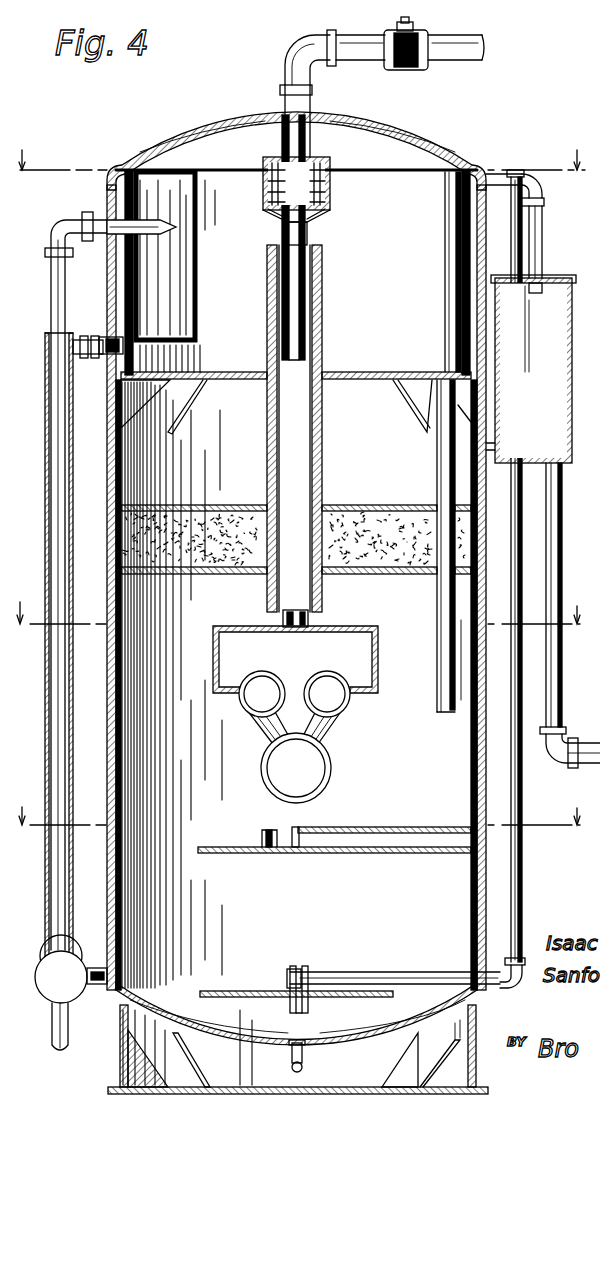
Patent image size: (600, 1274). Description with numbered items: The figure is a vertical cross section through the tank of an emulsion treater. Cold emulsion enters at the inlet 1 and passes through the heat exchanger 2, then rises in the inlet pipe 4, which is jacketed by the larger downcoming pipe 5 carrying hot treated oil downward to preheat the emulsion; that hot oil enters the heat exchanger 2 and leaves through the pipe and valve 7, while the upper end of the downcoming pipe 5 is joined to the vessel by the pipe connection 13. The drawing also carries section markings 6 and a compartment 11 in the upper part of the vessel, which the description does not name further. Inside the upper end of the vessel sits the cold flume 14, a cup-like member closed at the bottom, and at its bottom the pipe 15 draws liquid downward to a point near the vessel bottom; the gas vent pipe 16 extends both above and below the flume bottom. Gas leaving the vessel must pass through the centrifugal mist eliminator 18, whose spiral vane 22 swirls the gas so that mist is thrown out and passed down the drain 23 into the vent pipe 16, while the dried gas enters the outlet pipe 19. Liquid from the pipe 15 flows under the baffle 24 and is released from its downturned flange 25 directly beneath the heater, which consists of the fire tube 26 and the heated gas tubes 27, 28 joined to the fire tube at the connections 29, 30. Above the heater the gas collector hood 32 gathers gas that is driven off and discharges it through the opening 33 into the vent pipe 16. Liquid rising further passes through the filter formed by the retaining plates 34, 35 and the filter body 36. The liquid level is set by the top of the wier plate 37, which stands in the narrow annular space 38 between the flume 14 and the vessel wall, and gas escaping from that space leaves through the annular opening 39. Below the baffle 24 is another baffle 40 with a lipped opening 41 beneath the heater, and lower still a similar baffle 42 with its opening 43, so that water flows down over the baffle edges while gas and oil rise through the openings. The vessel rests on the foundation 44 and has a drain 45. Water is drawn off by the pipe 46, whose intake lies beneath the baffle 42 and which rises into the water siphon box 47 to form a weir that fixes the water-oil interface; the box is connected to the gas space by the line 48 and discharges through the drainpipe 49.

The inlet 1 is at (52, 1034).
The heat exchanger 2 is at (36, 950).
The inlet pipe 4 is at (52, 412).
The downcoming pipe 5 is at (30, 458).
The section line 6 is at (296, 600).
The pipe and valve 7 is at (296, 804).
The compartment 11 is at (182, 208).
The pipe connection 13 is at (89, 360).
The flume 14 is at (486, 224).
The pipe 15 is at (438, 442).
The gas vent pipe 16 is at (324, 307).
The centrifugal mist eliminator 18 is at (330, 182).
The outlet pipe 19 is at (440, 64).
The spiral vane 22 is at (263, 163).
The drain 23 is at (308, 240).
The baffle 24 is at (367, 826).
The downturned flange 25 is at (292, 827).
The fire tube 26 is at (333, 768).
The heated gas tube 27 is at (351, 709).
The heated gas tube 28 is at (239, 707).
The connection 29 is at (340, 734).
The connection 30 is at (262, 738).
The gas collector hood 32 is at (380, 657).
The opening 33 is at (310, 622).
The retaining plate 34 is at (395, 574).
The retaining plate 35 is at (398, 504).
The filter body 36 is at (352, 504).
The wier plate 37 is at (114, 332).
The annular space 38 is at (486, 262).
The annular opening 39 is at (478, 166).
The baffle 40 is at (350, 855).
The opening 41 is at (270, 827).
The baffle 42 is at (338, 972).
The opening 43 is at (272, 982).
The foundation 44 is at (478, 1073).
The drain 45 is at (308, 1068).
The pipe 46 is at (411, 972).
The water siphon box 47 is at (572, 386).
The line 48 is at (542, 231).
The drainpipe 49 is at (563, 555).